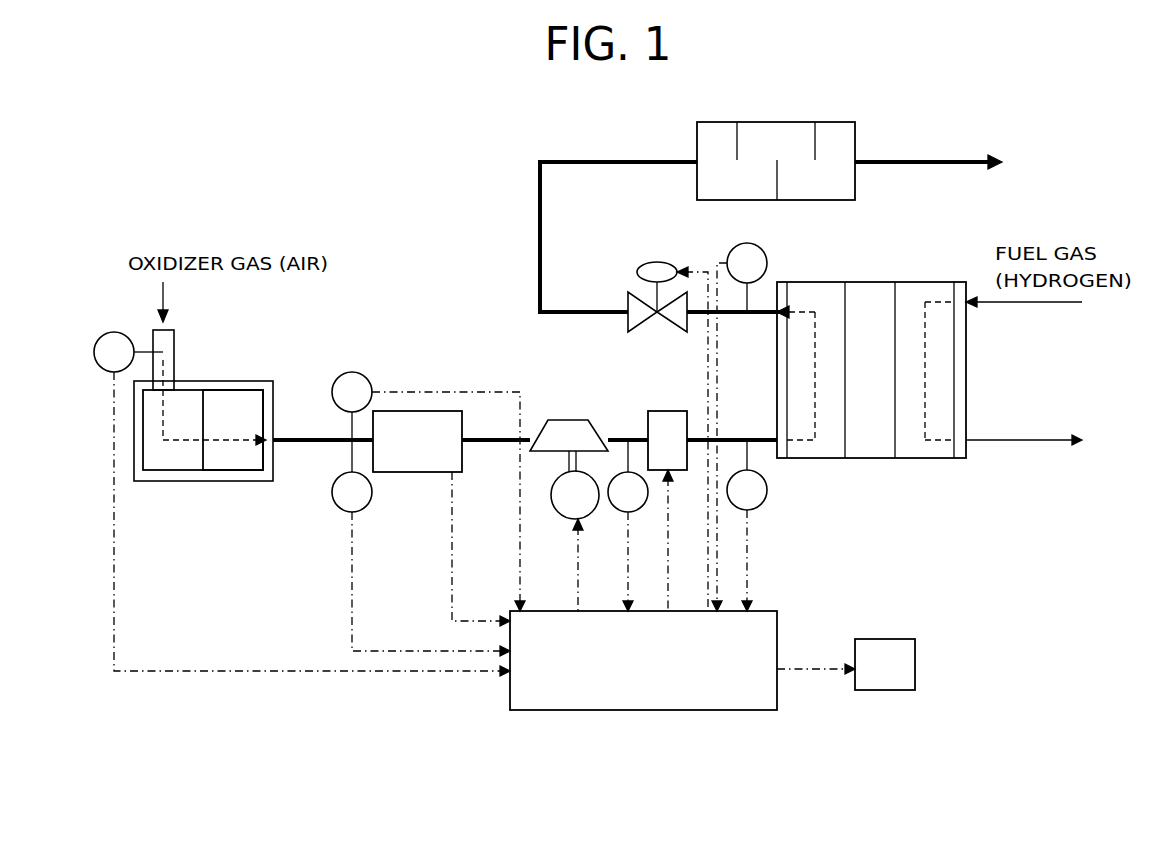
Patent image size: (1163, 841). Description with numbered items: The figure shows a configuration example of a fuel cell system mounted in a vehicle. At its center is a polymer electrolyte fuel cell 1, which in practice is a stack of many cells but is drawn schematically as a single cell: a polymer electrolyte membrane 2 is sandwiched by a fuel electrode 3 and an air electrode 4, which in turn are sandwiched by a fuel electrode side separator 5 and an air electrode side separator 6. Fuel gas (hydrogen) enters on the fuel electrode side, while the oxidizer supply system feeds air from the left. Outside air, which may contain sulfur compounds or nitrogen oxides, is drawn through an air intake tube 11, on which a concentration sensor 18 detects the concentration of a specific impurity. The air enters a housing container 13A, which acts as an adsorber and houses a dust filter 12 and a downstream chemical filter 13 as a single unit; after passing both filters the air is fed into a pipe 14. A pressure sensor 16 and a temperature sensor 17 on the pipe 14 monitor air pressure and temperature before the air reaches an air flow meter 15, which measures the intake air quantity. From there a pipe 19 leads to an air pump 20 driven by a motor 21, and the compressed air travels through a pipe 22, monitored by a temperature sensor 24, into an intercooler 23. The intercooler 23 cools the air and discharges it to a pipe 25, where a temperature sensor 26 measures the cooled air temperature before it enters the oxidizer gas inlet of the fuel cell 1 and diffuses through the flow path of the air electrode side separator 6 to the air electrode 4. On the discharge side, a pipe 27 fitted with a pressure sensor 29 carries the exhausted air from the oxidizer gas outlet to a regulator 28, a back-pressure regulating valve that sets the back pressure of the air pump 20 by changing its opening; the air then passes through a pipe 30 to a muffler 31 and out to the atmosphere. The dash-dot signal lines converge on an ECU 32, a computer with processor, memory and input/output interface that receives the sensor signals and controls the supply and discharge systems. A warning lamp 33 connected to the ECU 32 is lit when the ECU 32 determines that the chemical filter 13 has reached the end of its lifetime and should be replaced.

The fuel cell 1 is at (880, 277).
The polymer electrolyte membrane 2 is at (865, 460).
The fuel electrode 3 is at (912, 460).
The air electrode 4 is at (815, 460).
The fuel electrode side separator 5 is at (962, 460).
The air electrode side separator 6 is at (782, 460).
The air intake tube 11 is at (176, 346).
The dust filter 12 is at (165, 462).
The chemical filter 13 is at (223, 462).
The housing container 13A is at (205, 380).
The pipe 14 is at (312, 433).
The air flow meter 15 is at (402, 473).
The pressure sensor 16 is at (340, 370).
The temperature sensor 17 is at (366, 513).
The concentration sensor 18 is at (100, 370).
The pipe 19 is at (480, 443).
The air pump 20 is at (560, 418).
The motor 21 is at (558, 518).
The pipe 22 is at (617, 437).
The intercooler 23 is at (658, 410).
The temperature sensor 24 is at (615, 512).
The pipe 25 is at (745, 433).
The temperature sensor 26 is at (758, 507).
The pipe 27 is at (740, 317).
The regulator 28 is at (658, 262).
The pressure sensor 29 is at (733, 246).
The pipe 30 is at (580, 308).
The muffler 31 is at (787, 117).
The ECU 32 is at (778, 624).
The warning lamp 33 is at (895, 638).